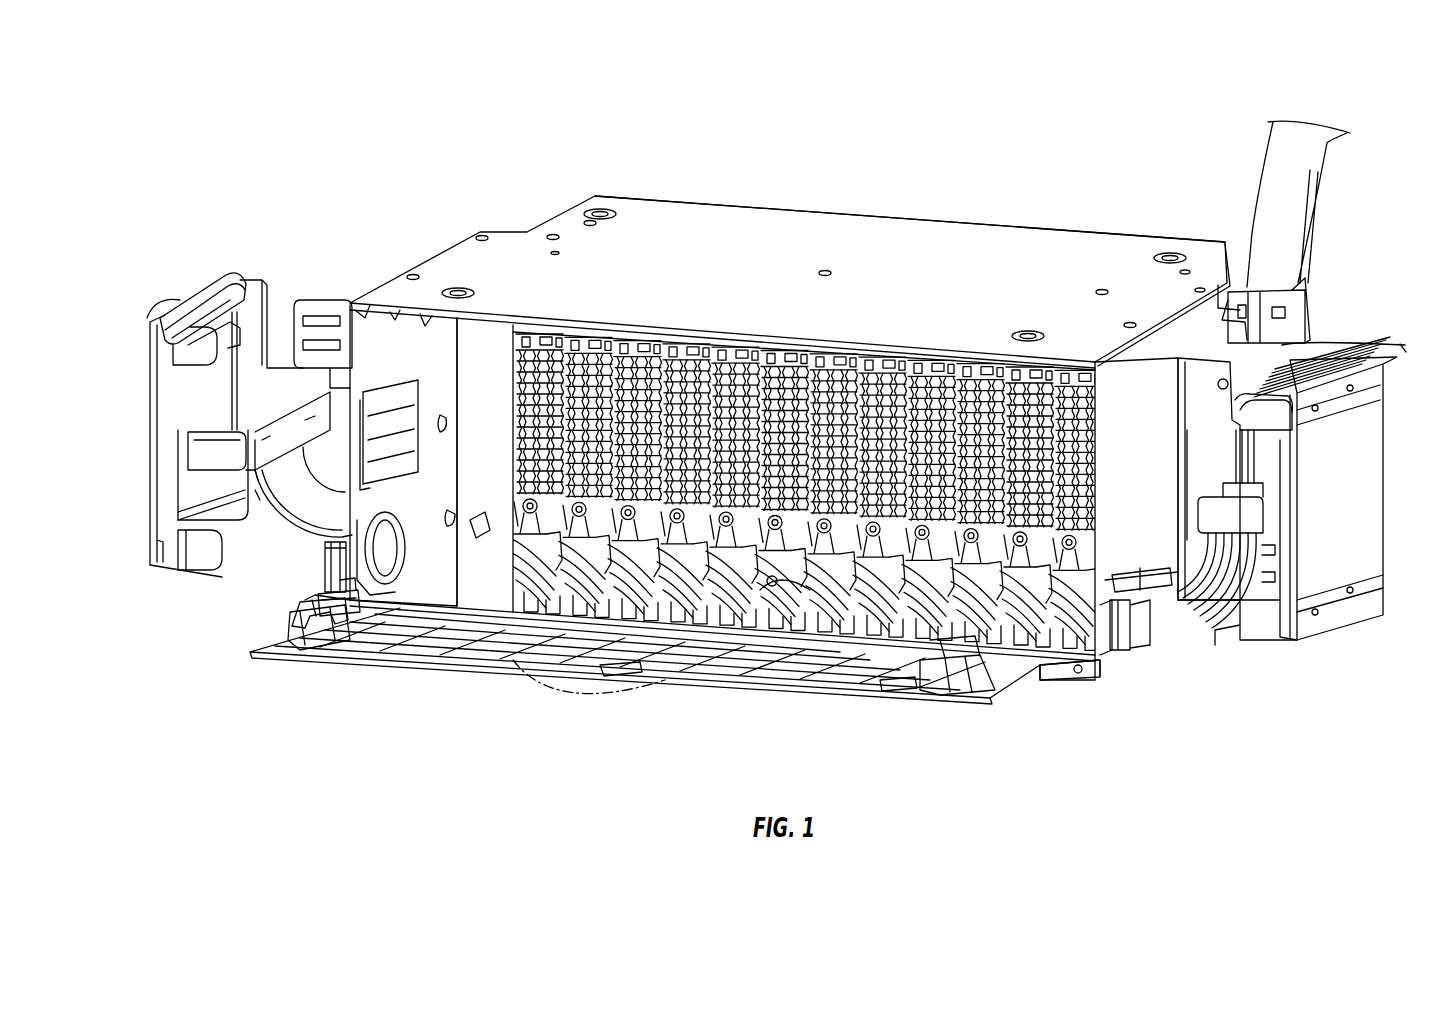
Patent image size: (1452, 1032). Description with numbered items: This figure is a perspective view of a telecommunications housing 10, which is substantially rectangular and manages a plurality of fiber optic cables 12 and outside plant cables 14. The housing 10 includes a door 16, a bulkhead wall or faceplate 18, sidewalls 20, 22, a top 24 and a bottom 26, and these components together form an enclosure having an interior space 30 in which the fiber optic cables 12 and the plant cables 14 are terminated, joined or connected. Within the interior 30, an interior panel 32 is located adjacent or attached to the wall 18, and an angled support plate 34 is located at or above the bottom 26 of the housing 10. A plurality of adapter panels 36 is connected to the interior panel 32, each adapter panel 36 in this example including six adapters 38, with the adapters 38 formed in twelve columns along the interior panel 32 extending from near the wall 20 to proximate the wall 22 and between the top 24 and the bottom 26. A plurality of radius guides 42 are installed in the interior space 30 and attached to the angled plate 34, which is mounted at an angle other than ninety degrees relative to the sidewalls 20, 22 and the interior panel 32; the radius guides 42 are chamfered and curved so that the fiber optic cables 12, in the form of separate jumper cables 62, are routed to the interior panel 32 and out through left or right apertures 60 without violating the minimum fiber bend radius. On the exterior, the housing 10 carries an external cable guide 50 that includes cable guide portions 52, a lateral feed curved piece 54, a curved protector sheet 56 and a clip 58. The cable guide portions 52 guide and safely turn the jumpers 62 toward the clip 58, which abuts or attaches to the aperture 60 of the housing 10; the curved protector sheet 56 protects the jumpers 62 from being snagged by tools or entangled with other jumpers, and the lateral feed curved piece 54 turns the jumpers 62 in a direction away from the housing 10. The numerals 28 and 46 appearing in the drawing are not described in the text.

The telecommunications housing 10 is at (790, 255).
The fiber optic cables 12 is at (1226, 606).
The outside plant cables 14 is at (1285, 222).
The door 16 is at (995, 702).
The bulkhead wall 18 is at (499, 371).
The sidewall 20 is at (406, 375).
The sidewall 22 is at (1140, 394).
The top 24 is at (508, 287).
The bottom 26 is at (1093, 681).
The rear edge 28 is at (802, 210).
The interior space 30 is at (428, 556).
The interior panel 32 is at (755, 497).
The angled support plate 34 is at (458, 528).
The adapter panels 36 is at (880, 320).
The adapters 38 is at (578, 336).
The radius guides 42 is at (806, 602).
The pivot post 46 is at (770, 598).
The external cable guide 50 is at (138, 416).
The cable guide portions 52 is at (205, 346).
The lateral feed curved piece 54 is at (180, 312).
The curved protector sheet 56 is at (304, 495).
The clip 58 is at (322, 555).
The apertures 60 is at (320, 588).
The jumper cables 62 is at (1398, 346).